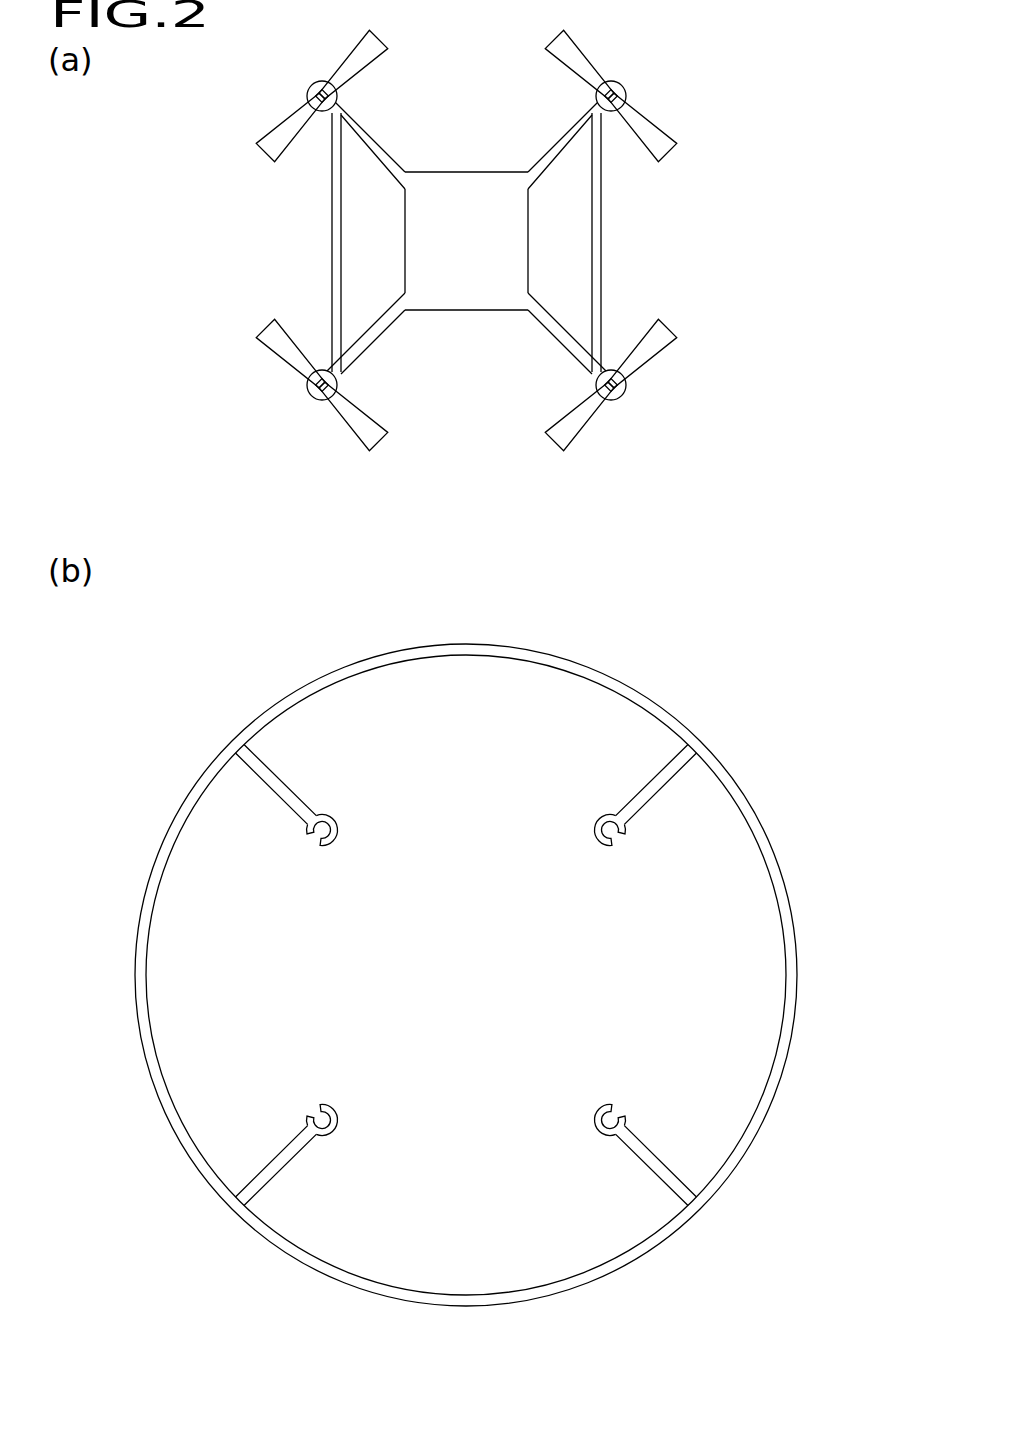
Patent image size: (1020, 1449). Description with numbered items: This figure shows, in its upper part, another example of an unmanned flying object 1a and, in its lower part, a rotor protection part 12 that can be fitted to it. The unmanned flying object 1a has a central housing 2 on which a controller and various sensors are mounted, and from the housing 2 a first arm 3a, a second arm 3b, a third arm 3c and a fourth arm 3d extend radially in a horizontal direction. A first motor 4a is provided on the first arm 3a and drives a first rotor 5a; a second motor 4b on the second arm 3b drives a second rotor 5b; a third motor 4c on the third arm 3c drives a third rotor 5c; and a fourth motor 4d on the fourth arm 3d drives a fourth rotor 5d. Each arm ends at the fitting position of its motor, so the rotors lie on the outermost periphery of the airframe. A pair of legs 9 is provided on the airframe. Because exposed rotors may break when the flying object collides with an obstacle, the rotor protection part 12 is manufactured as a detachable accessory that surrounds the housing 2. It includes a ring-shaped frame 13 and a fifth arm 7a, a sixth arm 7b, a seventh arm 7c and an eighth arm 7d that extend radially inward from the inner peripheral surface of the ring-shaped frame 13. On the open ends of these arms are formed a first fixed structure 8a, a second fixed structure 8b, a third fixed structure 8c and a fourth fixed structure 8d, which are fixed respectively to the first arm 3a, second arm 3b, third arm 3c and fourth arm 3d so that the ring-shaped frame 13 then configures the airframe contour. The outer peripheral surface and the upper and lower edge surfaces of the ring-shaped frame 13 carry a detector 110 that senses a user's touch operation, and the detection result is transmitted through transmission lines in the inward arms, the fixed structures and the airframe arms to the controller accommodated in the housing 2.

The unmanned flying object 1a is at (467, 269).
The housing 2 is at (466, 178).
The first arm 3a is at (373, 130).
The second arm 3b is at (373, 352).
The third arm 3c is at (561, 352).
The fourth arm 3d is at (561, 132).
The first motor 4a is at (307, 98).
The second motor 4b is at (307, 385).
The third motor 4c is at (626, 385).
The fourth motor 4d is at (626, 98).
The first rotor 5a is at (388, 47).
The second rotor 5b is at (388, 438).
The third rotor 5c is at (546, 438).
The fourth rotor 5d is at (546, 47).
The legs 9 is at (331, 247).
The rotor protection part 12 is at (466, 980).
The ring-shaped frame 13 is at (466, 949).
The detector 110 is at (653, 695).
The fifth arm 7a is at (286, 790).
The sixth arm 7b is at (286, 1160).
The seventh arm 7c is at (646, 1160).
The eighth arm 7d is at (646, 790).
The first fixed structure 8a is at (334, 812).
The second fixed structure 8b is at (334, 1138).
The third fixed structure 8c is at (598, 1138).
The fourth fixed structure 8d is at (598, 812).